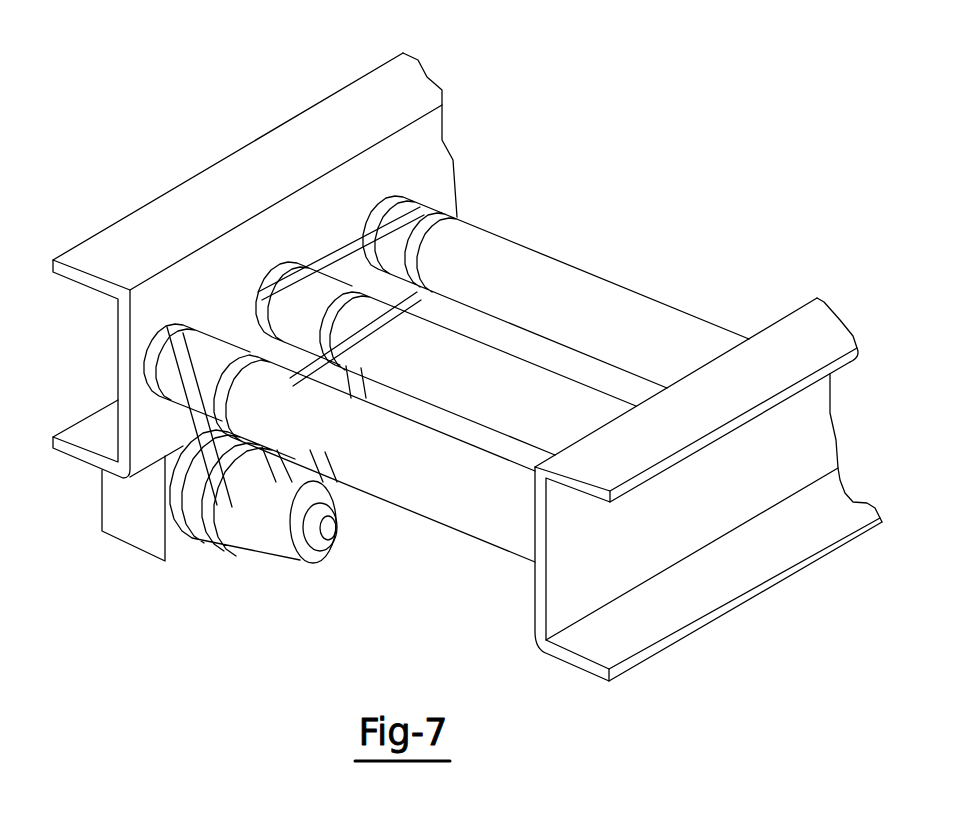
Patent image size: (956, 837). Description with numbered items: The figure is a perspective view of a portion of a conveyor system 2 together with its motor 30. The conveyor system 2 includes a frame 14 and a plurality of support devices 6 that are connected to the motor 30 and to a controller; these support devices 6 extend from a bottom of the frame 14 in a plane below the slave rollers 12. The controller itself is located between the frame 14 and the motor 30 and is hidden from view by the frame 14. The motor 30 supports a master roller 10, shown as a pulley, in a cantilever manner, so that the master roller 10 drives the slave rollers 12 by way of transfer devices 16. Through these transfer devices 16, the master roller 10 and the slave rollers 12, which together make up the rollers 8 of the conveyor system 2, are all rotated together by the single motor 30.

The conveyor system 2 is at (541, 86).
The support devices 6 is at (590, 405).
The rollers 8 is at (446, 423).
The master roller 10 is at (248, 522).
The slave rollers 12 is at (523, 378).
The frame 14 is at (90, 238).
The transfer devices 16 is at (337, 307).
The motor 30 is at (118, 510).